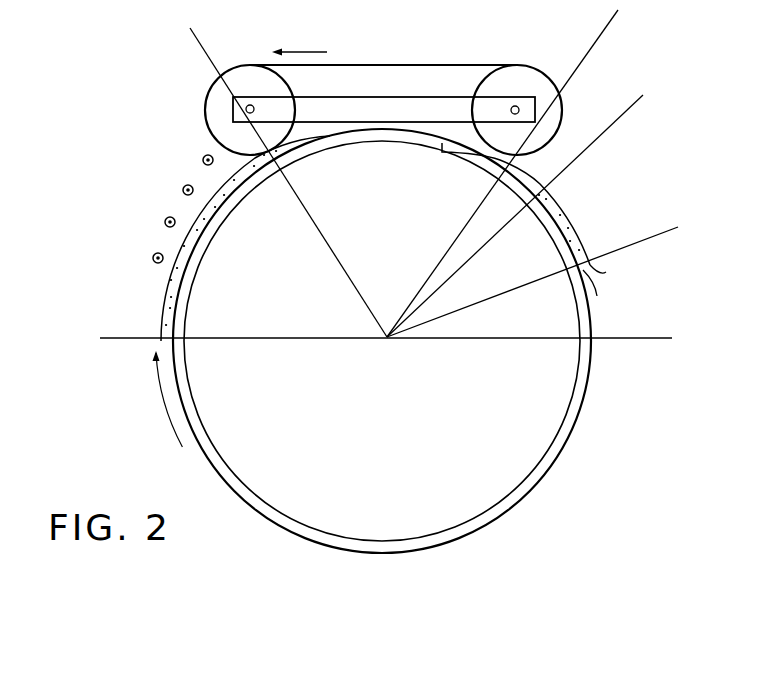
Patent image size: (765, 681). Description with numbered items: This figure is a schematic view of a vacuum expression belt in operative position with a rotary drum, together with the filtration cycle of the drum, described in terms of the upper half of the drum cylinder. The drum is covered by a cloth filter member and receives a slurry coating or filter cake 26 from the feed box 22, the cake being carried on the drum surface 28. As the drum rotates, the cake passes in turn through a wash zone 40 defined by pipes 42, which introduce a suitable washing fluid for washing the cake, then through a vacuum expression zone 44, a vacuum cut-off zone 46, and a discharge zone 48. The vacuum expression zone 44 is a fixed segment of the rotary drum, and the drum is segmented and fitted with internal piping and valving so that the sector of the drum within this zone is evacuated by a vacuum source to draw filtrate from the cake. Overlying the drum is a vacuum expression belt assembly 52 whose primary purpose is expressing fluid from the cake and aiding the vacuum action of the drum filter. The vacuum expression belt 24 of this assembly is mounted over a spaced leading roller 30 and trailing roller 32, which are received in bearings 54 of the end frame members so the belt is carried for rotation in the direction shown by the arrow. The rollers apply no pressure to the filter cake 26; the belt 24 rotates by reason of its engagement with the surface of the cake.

The feed box 22 is at (130, 369).
The vacuum expression belt 24 is at (350, 64).
The filter cake 26 is at (163, 306).
The drum surface 28 is at (593, 317).
The leading roller 30 is at (216, 108).
The trailing roller 32 is at (556, 113).
The wash zone 40 is at (132, 206).
The pipes 42 is at (201, 160).
The vacuum expression zone 44 is at (439, 263).
The vacuum cut-off zone 46 is at (500, 272).
The discharge zone 48 is at (514, 230).
The vacuum expression belt assembly 52 is at (376, 81).
The bearings 54 is at (360, 105).